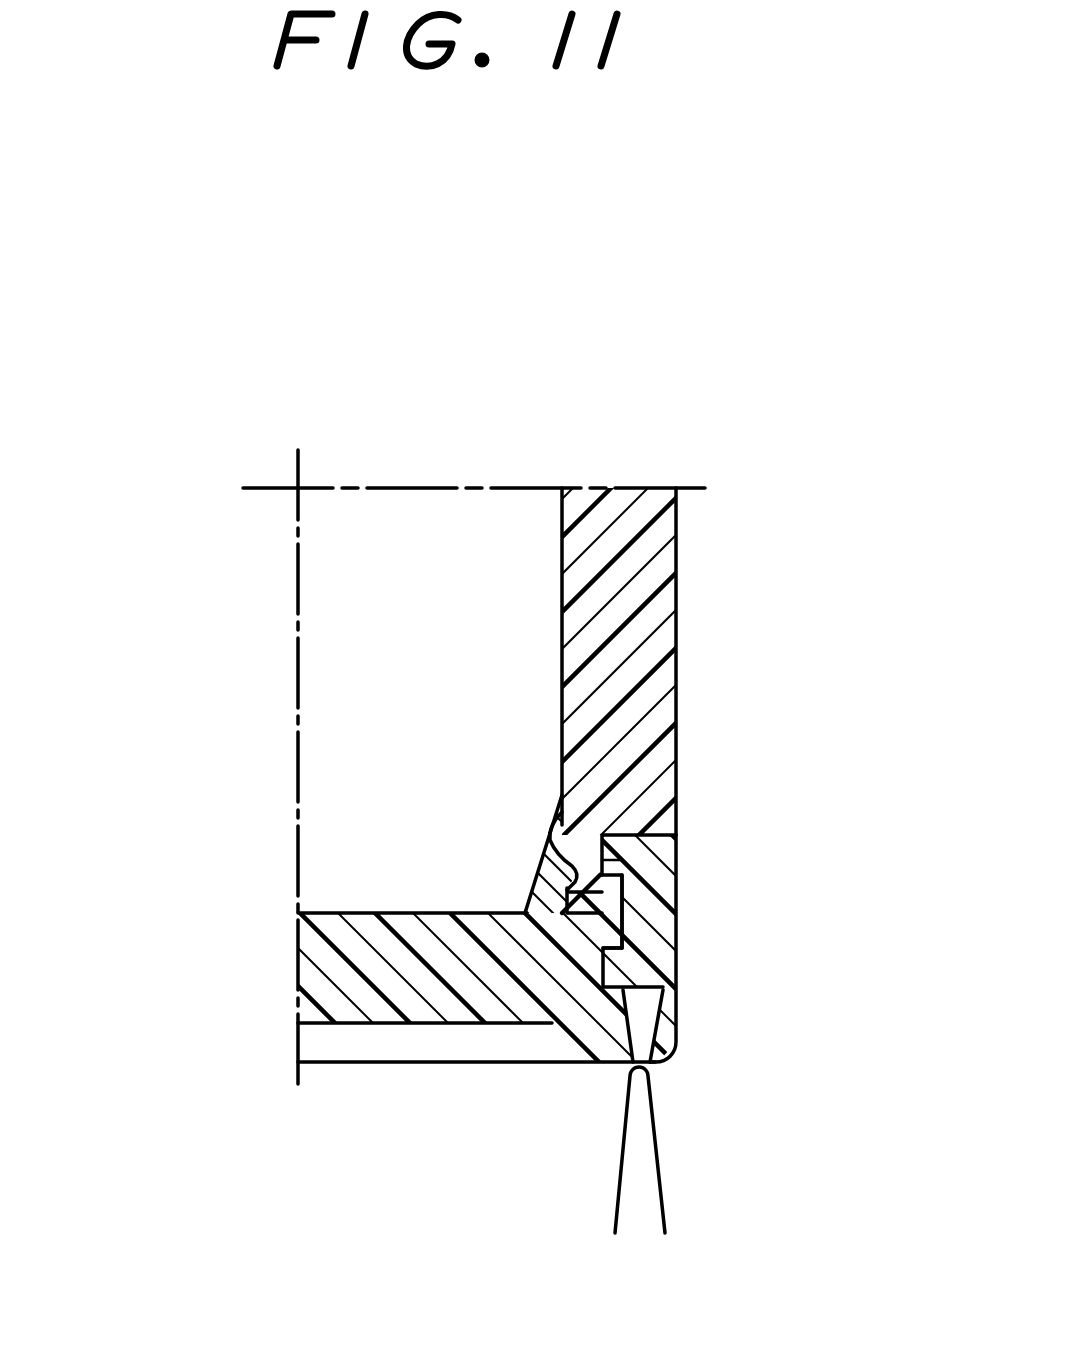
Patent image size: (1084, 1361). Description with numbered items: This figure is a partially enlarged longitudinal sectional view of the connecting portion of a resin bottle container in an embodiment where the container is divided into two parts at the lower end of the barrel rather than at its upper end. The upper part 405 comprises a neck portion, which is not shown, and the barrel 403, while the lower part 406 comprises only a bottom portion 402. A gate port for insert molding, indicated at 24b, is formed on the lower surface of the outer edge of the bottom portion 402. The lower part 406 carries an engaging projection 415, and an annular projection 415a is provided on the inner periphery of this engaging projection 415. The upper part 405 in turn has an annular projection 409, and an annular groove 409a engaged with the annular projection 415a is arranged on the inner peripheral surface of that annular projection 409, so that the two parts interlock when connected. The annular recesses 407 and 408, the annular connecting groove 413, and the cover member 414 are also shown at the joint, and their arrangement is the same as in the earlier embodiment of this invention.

The barrel 403 is at (663, 539).
The upper part 405 is at (318, 642).
The lower part 406 is at (327, 975).
The bottom portion 402 is at (370, 1025).
The engaging projection 415 is at (543, 880).
The annular projection 415a is at (553, 847).
The annular projection 409 is at (610, 889).
The annular groove 409a is at (600, 835).
The annular recess 407 is at (640, 853).
The cover member 414 is at (665, 955).
The annular recess 408 is at (617, 975).
The annular connecting groove 413 is at (622, 936).
The pin end 24b is at (645, 1082).